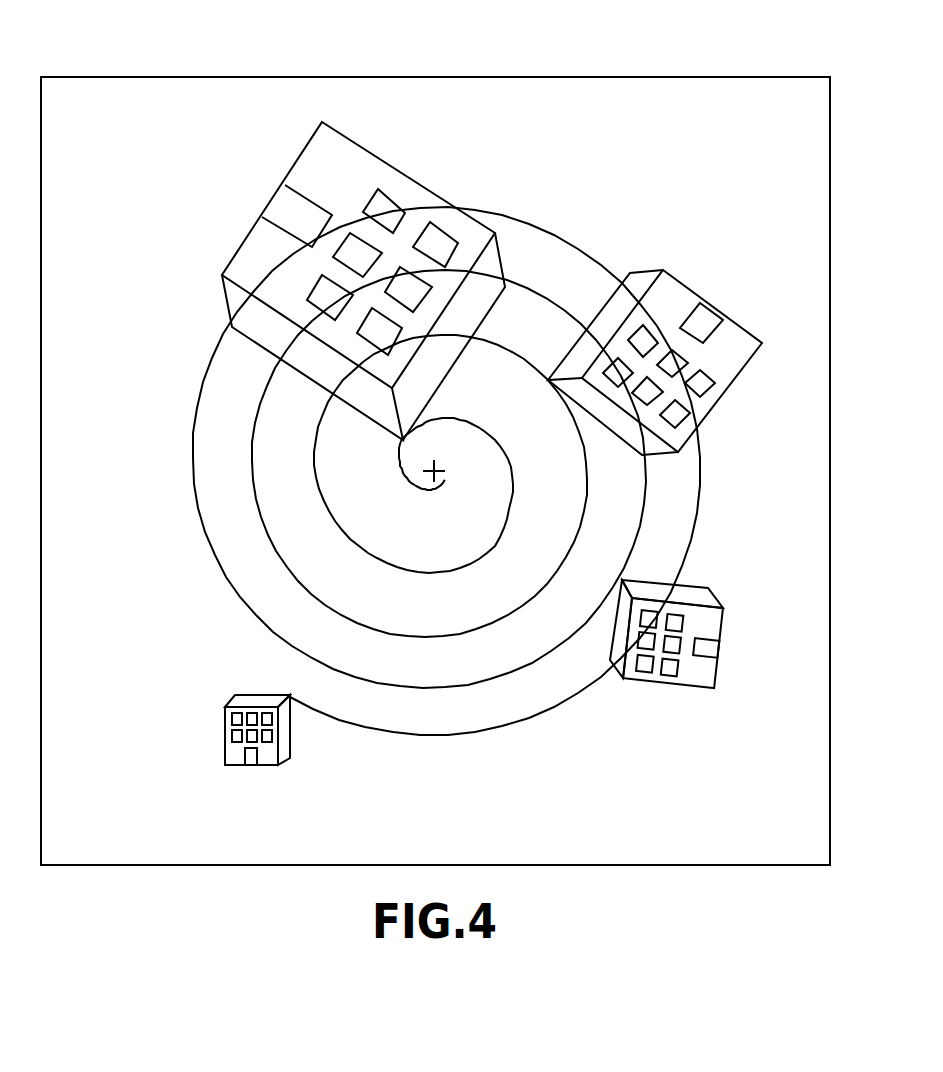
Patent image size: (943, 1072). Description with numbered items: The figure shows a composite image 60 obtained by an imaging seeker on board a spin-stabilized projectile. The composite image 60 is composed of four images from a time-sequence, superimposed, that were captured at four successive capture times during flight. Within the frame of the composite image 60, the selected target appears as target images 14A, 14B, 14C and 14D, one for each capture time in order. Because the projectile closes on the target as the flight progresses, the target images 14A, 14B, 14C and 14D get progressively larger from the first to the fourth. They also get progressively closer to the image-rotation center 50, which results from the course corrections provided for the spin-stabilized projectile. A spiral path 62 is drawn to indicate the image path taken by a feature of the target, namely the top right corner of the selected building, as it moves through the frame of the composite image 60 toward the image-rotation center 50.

The composite image 60 is at (592, 100).
The spiral path 62 is at (205, 525).
The image-rotation center 50 is at (476, 478).
The target image 14A is at (222, 735).
The target image 14B is at (670, 683).
The target image 14C is at (683, 283).
The target image 14D is at (240, 246).